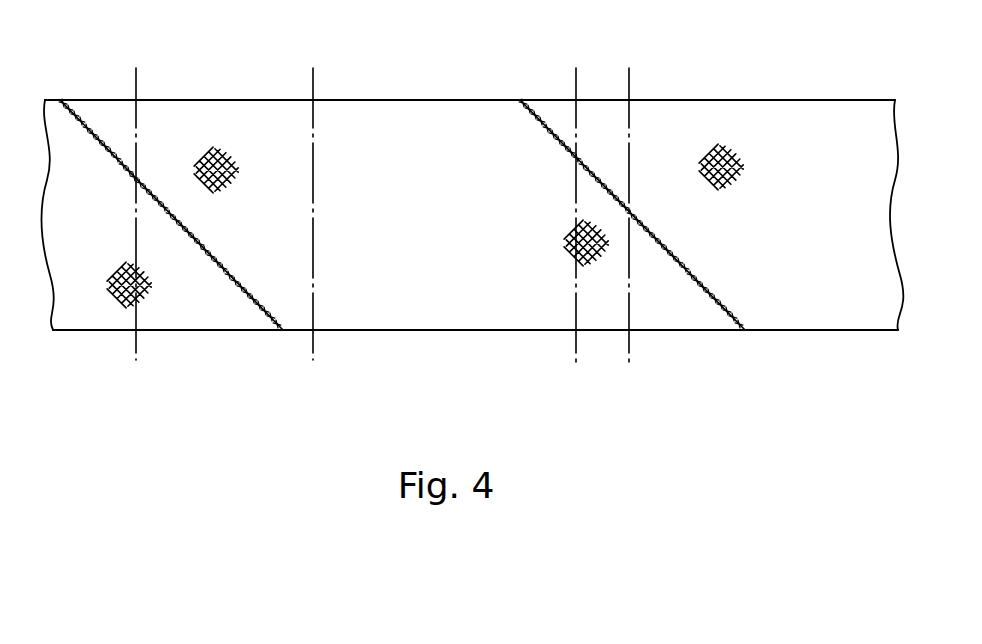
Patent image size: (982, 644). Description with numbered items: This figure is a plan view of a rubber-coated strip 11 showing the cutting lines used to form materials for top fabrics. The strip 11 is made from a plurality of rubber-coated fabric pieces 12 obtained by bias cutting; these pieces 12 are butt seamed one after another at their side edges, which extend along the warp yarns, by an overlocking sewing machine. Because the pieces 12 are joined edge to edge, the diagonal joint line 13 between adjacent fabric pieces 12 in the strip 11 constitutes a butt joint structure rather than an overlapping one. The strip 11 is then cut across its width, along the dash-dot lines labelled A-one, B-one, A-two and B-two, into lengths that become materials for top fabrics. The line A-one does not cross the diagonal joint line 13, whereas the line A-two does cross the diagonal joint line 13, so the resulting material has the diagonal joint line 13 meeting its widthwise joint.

The rubber-coated strip 11 is at (391, 98).
The rubber-coated fabric pieces 12 is at (432, 112).
The diagonal joint line 13 is at (93, 130).